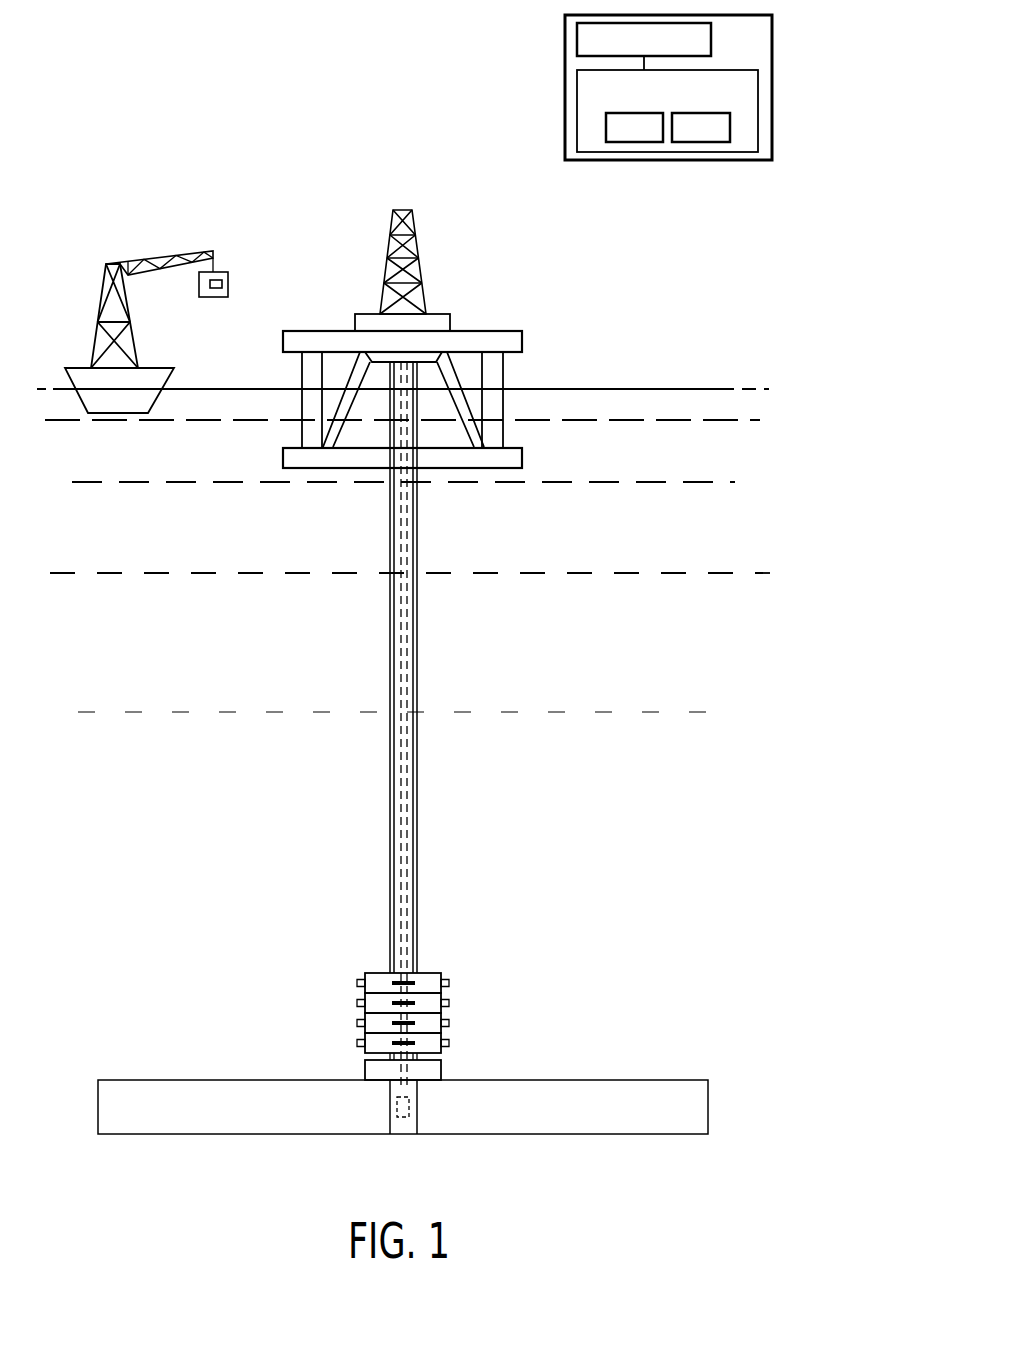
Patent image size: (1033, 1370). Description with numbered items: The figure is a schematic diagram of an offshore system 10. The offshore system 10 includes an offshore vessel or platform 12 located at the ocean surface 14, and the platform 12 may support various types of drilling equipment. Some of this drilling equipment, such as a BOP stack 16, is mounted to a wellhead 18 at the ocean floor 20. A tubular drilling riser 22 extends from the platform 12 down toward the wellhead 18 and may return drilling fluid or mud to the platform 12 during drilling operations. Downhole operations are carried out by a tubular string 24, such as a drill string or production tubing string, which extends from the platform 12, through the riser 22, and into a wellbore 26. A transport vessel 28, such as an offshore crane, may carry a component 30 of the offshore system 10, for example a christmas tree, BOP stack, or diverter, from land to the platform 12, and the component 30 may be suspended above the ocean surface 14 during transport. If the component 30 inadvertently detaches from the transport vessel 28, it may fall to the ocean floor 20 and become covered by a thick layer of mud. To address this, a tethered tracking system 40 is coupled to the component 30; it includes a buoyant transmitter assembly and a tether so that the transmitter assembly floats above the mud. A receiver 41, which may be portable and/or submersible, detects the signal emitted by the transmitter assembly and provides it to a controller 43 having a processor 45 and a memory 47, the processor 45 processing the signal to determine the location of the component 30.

The offshore system 10 is at (600, 280).
The platform 12 is at (433, 314).
The ocean surface 14 is at (641, 387).
The BOP stack 16 is at (345, 971).
The wellhead 18 is at (365, 1068).
The ocean floor 20 is at (548, 1080).
The tubular drilling riser 22 is at (414, 856).
The tubular string 24 is at (403, 910).
The wellbore 26 is at (415, 1123).
The transport vessel 28 is at (212, 230).
The component 30 is at (222, 284).
The tethered tracking system 40 is at (213, 297).
The receiver 41 is at (711, 37).
The controller 43 is at (758, 108).
The processor 45 is at (635, 143).
The memory 47 is at (700, 143).